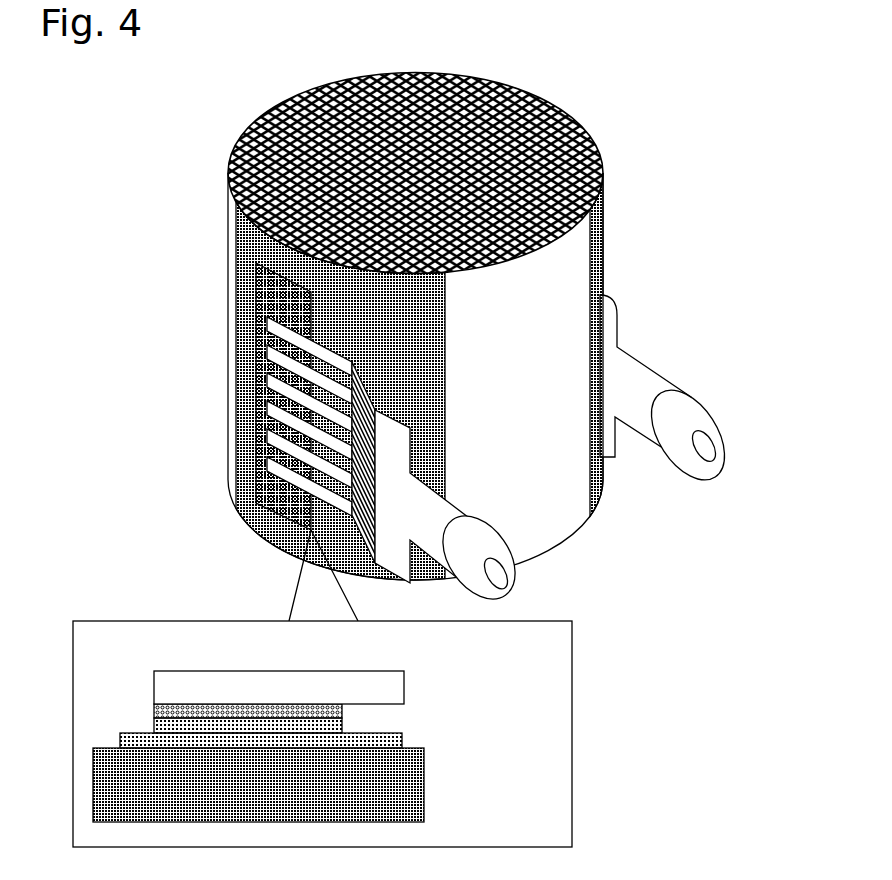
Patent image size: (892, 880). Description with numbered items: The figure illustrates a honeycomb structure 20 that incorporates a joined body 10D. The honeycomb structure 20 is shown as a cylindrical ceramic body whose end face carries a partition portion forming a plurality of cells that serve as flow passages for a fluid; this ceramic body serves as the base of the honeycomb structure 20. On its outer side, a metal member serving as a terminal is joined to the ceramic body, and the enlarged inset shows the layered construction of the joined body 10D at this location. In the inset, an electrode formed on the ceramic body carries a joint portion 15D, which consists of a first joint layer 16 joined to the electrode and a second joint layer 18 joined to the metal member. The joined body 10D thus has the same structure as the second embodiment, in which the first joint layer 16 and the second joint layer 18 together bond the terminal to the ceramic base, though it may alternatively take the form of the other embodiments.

The honeycomb structure 20 is at (448, 337).
The joined body 10D is at (328, 728).
The joint portion 15D is at (358, 718).
The first joint layer 16 is at (342, 725).
The second joint layer 18 is at (342, 710).